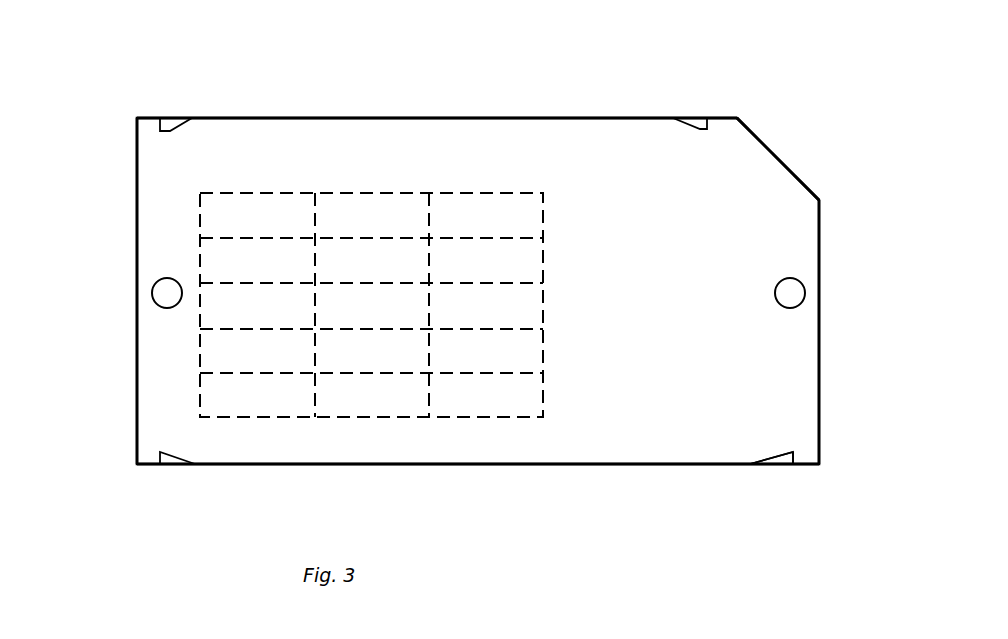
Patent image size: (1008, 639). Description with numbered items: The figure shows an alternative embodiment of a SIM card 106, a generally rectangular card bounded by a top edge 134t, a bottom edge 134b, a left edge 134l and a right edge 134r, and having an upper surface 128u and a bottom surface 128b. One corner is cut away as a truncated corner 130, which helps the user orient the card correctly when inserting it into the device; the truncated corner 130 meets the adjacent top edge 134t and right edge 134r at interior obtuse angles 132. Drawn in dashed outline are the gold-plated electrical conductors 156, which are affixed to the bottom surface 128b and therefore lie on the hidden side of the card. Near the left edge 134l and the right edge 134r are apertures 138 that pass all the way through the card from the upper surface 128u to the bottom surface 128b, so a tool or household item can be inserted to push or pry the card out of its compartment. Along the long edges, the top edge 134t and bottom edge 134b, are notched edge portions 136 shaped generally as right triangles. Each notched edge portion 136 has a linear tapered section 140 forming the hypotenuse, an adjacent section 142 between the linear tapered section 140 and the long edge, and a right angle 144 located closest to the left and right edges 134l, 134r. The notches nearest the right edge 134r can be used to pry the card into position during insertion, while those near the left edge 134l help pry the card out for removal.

The SIM card 106 is at (606, 528).
The upper surface 128u is at (590, 152).
The bottom surface 128b is at (108, 390).
The truncated corner 130 is at (799, 173).
The interior obtuse angles 132 is at (734, 121).
The top edge 134t is at (470, 118).
The left edge 134l is at (137, 208).
The right edge 134r is at (821, 248).
The bottom edge 134b is at (528, 464).
The notched edge portions 136 is at (176, 118).
The apertures 138 is at (152, 295).
The linear tapered section 140 is at (748, 463).
The adjacent section 142 is at (793, 455).
The right angle 144 is at (793, 464).
The gold-plated electrical conductors 156 is at (372, 215).